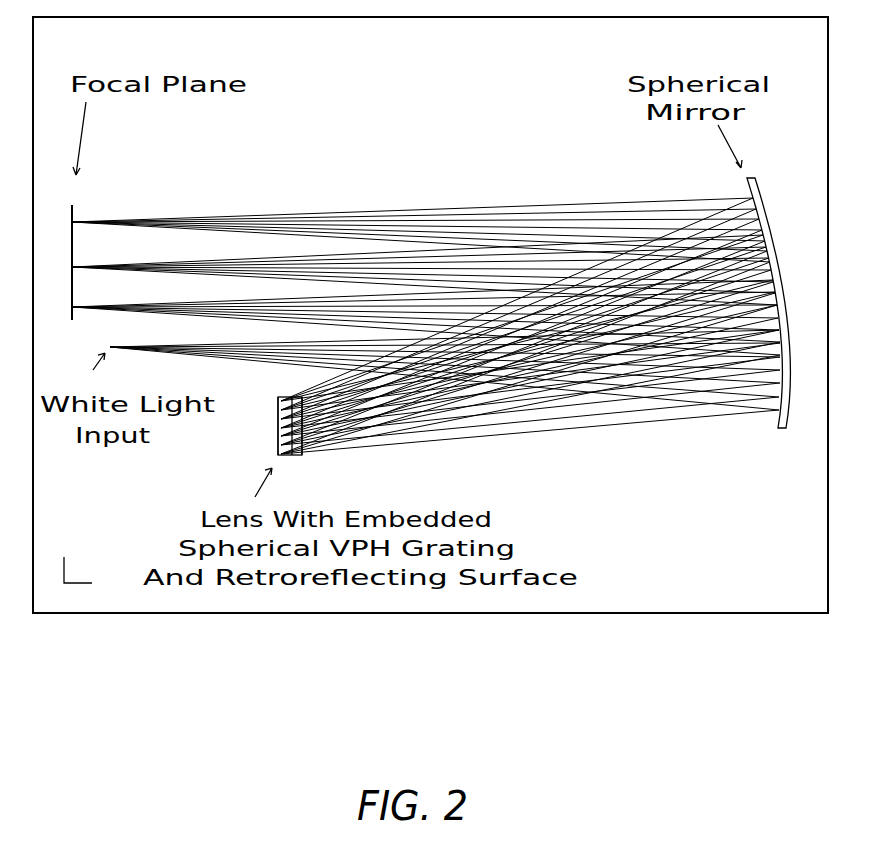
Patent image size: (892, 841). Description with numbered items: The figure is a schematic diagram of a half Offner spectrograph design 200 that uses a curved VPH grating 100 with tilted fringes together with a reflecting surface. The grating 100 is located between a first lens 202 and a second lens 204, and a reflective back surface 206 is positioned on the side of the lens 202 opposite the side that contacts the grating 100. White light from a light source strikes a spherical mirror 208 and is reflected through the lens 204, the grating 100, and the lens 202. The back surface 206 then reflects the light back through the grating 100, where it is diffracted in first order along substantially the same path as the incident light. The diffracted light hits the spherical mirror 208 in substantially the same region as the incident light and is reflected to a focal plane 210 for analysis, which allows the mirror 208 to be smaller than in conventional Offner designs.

The half Offner spectrograph design 200 is at (434, 72).
The grating 100 is at (293, 397).
The lens 202 is at (280, 400).
The lens 204 is at (300, 397).
The reflective back surface 206 is at (278, 415).
The spherical mirror 208 is at (772, 240).
The focal plane 210 is at (72, 252).